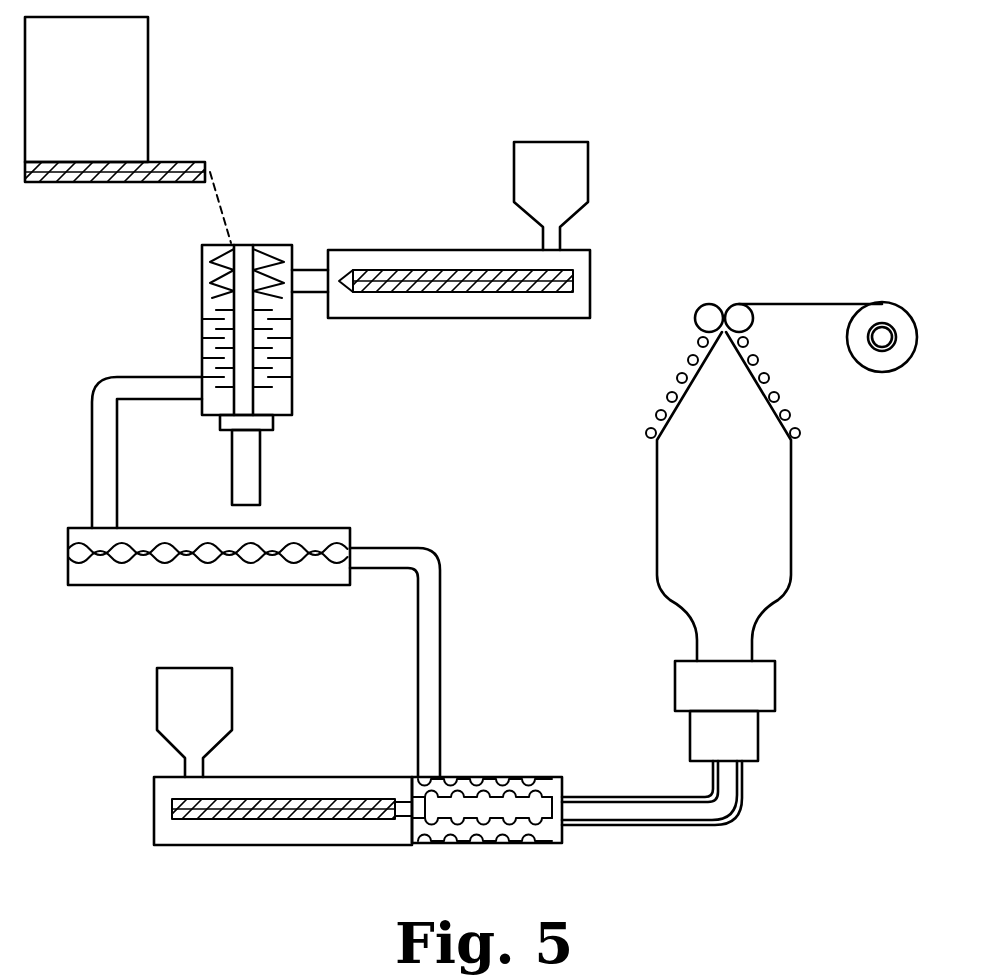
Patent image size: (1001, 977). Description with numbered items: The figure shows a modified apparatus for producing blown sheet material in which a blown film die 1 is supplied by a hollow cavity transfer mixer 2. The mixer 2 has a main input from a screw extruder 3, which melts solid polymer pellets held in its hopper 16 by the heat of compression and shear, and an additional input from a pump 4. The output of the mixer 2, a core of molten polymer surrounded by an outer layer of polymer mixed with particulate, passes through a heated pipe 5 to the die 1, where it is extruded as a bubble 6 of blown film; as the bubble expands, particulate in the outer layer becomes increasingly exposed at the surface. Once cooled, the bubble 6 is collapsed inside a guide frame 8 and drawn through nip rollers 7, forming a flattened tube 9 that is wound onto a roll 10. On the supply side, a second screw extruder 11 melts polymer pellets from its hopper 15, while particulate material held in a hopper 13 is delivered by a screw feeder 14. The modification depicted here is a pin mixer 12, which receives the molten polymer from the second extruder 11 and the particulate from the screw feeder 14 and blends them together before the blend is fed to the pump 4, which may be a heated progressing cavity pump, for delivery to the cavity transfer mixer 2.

The blown film die 1 is at (760, 684).
The hollow cavity transfer mixer 2 is at (545, 845).
The screw extruder 3 is at (394, 845).
The pump 4 is at (340, 533).
The heated pipe 5 is at (680, 827).
The bubble 6 is at (770, 518).
The nip rollers 7 is at (709, 312).
The guide frame 8 is at (779, 400).
The flattened tube 9 is at (795, 303).
The roll 10 is at (884, 340).
The second screw extruder 11 is at (590, 292).
The pin mixer 12 is at (208, 297).
The hopper 13 is at (130, 60).
The screw feeder 14 is at (198, 162).
The hopper 15 is at (575, 150).
The hopper 16 is at (178, 703).